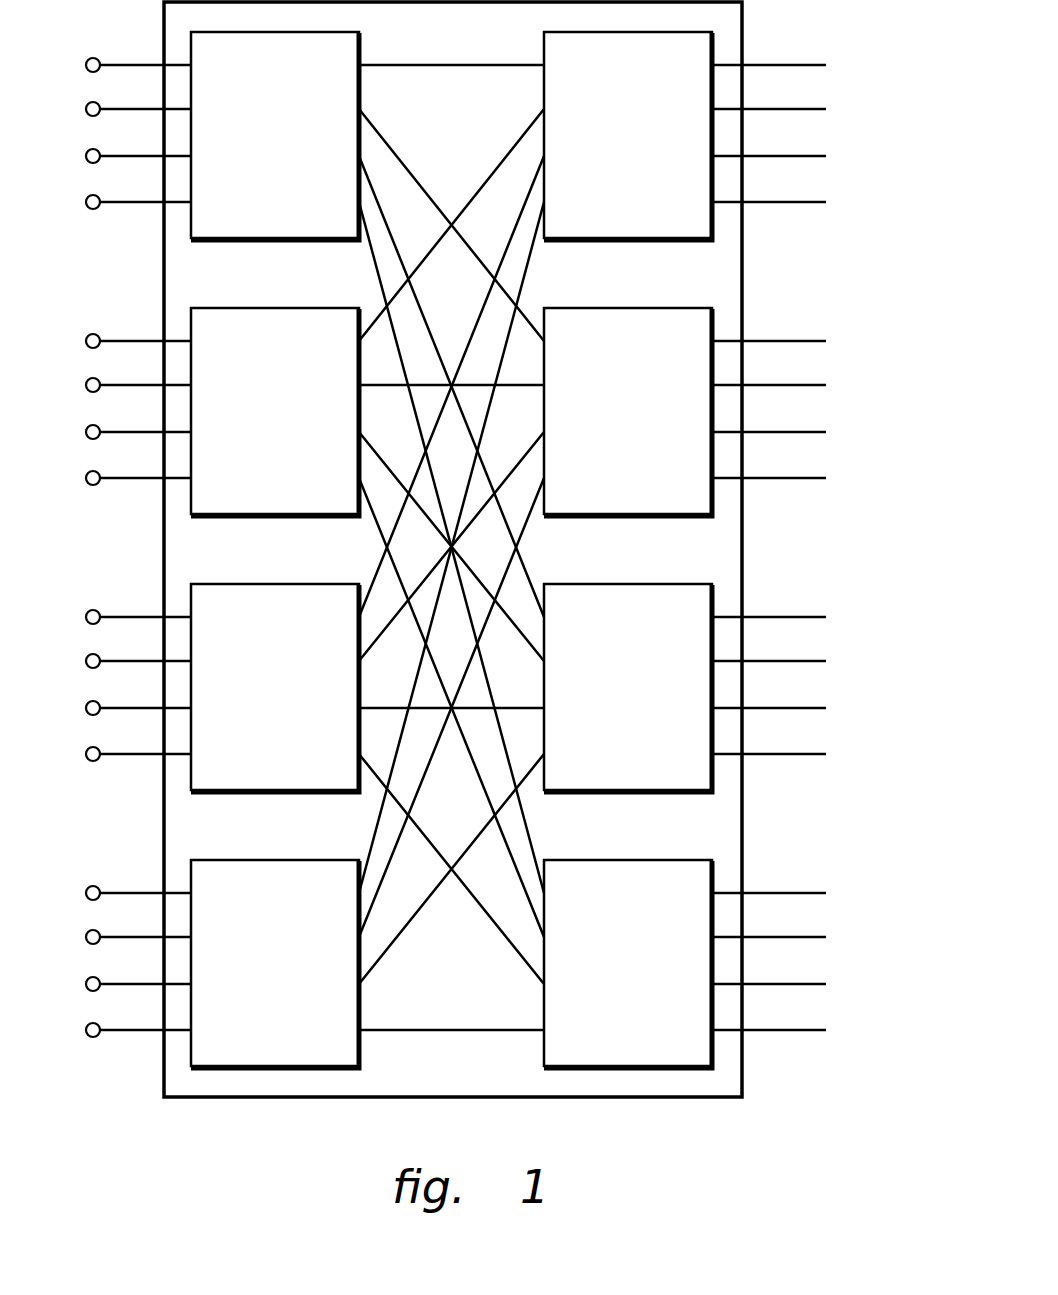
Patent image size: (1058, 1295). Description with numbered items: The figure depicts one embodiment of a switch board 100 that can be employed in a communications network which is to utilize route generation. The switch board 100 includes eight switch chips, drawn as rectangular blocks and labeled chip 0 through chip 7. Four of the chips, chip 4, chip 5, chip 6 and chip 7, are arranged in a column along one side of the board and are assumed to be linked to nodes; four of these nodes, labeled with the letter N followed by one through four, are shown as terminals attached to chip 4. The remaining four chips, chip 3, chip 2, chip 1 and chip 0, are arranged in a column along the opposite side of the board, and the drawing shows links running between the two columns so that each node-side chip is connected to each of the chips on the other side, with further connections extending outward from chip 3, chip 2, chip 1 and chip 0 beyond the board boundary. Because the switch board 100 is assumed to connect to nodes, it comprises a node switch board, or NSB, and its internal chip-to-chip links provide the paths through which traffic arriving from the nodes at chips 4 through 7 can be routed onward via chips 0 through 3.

The switch board 100 is at (58, 303).
The switch chip 0 is at (628, 964).
The switch chip 1 is at (628, 688).
The switch chip 2 is at (628, 412).
The switch chip 3 is at (628, 136).
The switch chip 4 is at (275, 136).
The switch chip 5 is at (275, 412).
The switch chip 6 is at (275, 688).
The switch chip 7 is at (275, 964).